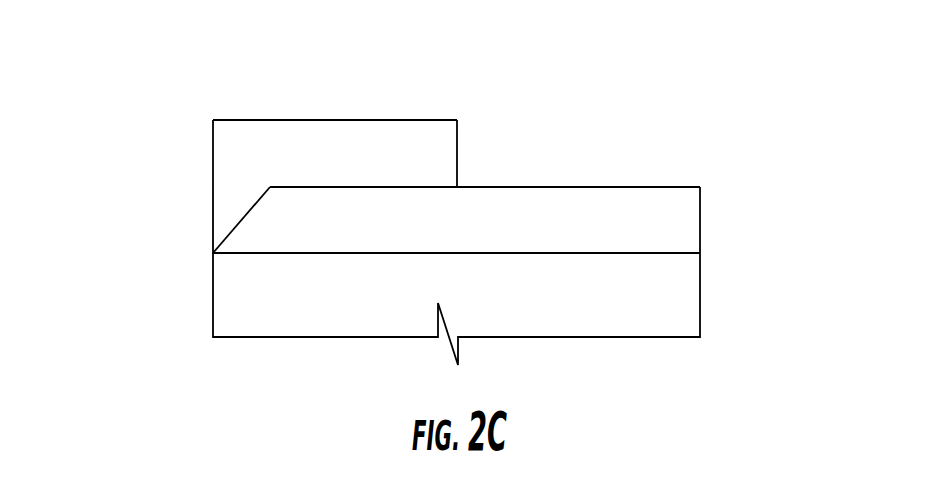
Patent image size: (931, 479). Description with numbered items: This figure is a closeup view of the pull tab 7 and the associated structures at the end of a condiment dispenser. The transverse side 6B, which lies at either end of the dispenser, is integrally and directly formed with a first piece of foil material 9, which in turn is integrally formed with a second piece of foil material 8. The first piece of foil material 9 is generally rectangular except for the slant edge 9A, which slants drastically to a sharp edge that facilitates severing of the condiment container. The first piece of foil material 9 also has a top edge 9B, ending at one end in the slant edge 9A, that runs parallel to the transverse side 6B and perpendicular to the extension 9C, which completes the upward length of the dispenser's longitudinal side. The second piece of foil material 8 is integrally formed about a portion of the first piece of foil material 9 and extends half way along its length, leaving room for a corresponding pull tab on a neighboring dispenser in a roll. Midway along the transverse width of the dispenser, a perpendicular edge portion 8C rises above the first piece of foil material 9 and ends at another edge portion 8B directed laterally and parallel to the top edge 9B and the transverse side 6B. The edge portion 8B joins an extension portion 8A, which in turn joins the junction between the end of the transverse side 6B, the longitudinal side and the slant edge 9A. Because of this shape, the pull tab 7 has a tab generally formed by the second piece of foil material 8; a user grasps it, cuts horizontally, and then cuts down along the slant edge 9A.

The pull tab 7 is at (120, 132).
The second piece of foil material 8 is at (357, 158).
The extension portion 8A is at (213, 173).
The edge portion 8B is at (250, 120).
The perpendicular edge portion 8C is at (457, 140).
The first piece of foil material 9 is at (605, 233).
The slant edge 9A is at (250, 210).
The top edge 9B is at (590, 189).
The extension 9C is at (700, 233).
The transverse side 6B is at (535, 243).